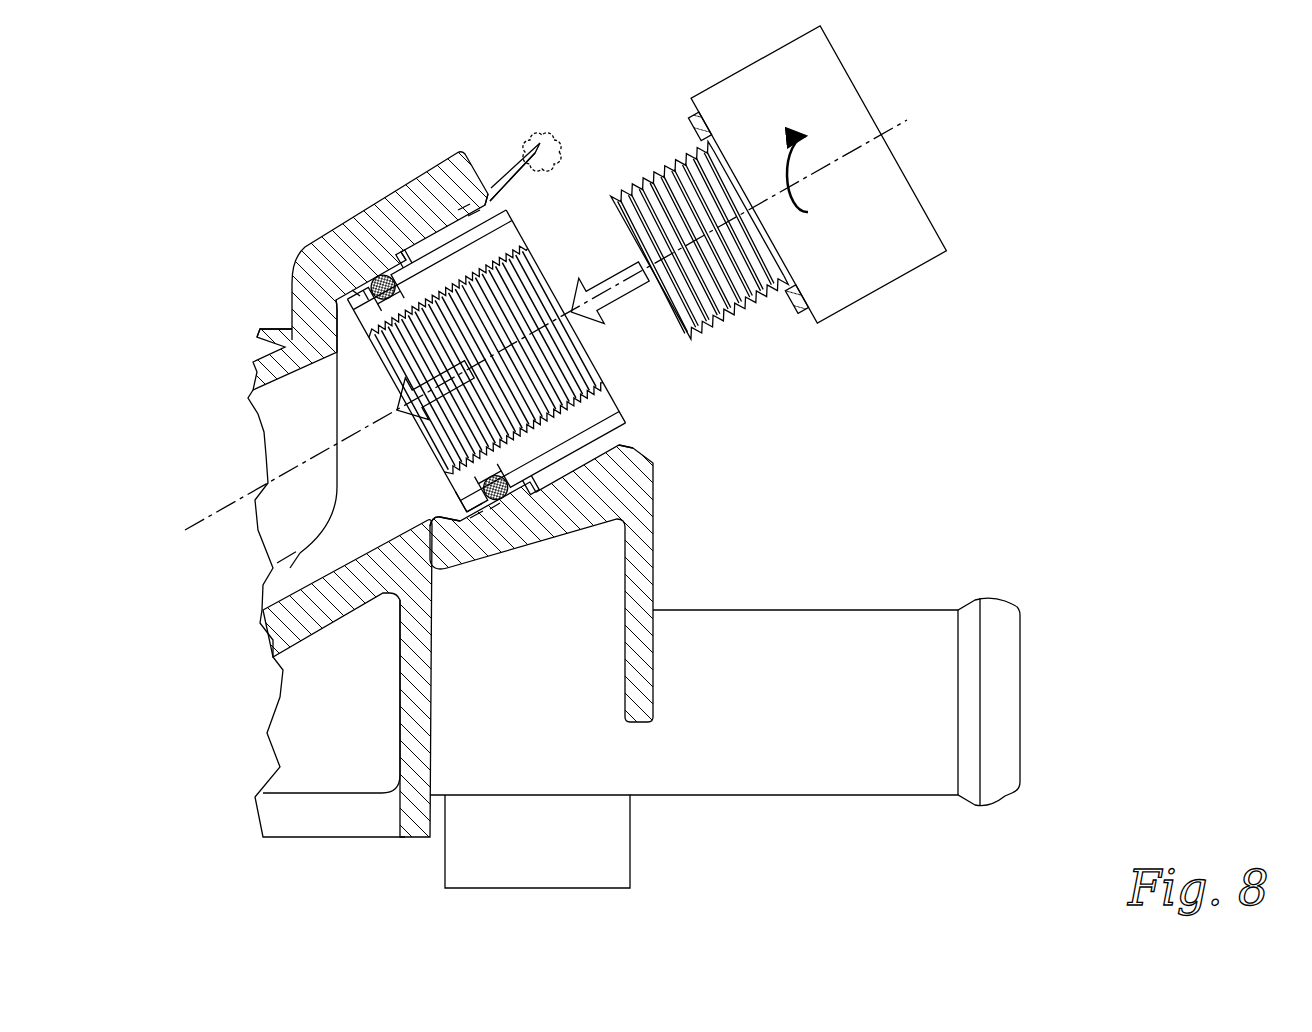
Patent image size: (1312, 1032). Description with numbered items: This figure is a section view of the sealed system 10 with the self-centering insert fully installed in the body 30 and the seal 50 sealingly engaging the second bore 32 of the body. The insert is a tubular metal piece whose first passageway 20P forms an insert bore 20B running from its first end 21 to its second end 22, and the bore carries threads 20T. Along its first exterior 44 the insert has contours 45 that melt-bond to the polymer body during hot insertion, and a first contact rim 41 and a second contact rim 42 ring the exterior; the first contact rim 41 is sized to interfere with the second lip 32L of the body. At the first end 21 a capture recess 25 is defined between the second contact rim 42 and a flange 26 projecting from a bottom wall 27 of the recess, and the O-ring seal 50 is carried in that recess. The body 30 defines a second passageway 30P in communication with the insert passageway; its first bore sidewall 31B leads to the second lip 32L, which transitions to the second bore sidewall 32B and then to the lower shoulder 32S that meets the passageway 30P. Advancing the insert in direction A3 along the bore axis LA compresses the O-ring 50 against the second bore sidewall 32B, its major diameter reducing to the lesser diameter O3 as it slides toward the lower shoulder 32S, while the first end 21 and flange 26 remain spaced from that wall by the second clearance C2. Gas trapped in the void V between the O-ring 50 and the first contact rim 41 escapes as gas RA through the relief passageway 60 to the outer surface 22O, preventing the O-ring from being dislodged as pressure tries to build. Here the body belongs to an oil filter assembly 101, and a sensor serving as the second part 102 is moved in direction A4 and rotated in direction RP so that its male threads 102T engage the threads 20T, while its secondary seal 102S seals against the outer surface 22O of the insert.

The sealed system 10 is at (287, 163).
The insert bore 20B is at (575, 362).
The threads 20T is at (540, 293).
The first passageway 20P is at (556, 315).
The first end 21 is at (358, 317).
The second end 22 is at (537, 173).
The outer surface 22O is at (523, 227).
The capture recess 25 is at (390, 293).
The flange 26 is at (462, 506).
The bottom wall 27 is at (390, 297).
The body 30 is at (283, 290).
The second passageway 30P is at (367, 513).
The first bore sidewall 31B is at (458, 200).
The second bore 32 is at (353, 300).
The second lip 32L is at (393, 277).
The lower shoulder 32S is at (478, 528).
The second bore sidewall 32B is at (504, 514).
The first contact rim 41 is at (400, 260).
The second contact rim 42 is at (372, 272).
The first exterior 44 is at (463, 213).
The contours 45 is at (624, 433).
The seal 50 is at (377, 280).
The relief passageway 60 is at (473, 213).
The oil filter assembly 101 is at (660, 563).
The second part 102 is at (875, 310).
The secondary seal 102S is at (693, 124).
The threads 102T is at (745, 315).
The direction A3 is at (433, 389).
The direction A4 is at (608, 292).
The second clearance C2 is at (488, 528).
The bore axis LA is at (200, 522).
The lesser diameter O3 is at (507, 498).
The gas RA is at (517, 165).
The rotation direction RP is at (818, 174).
The void V is at (393, 273).